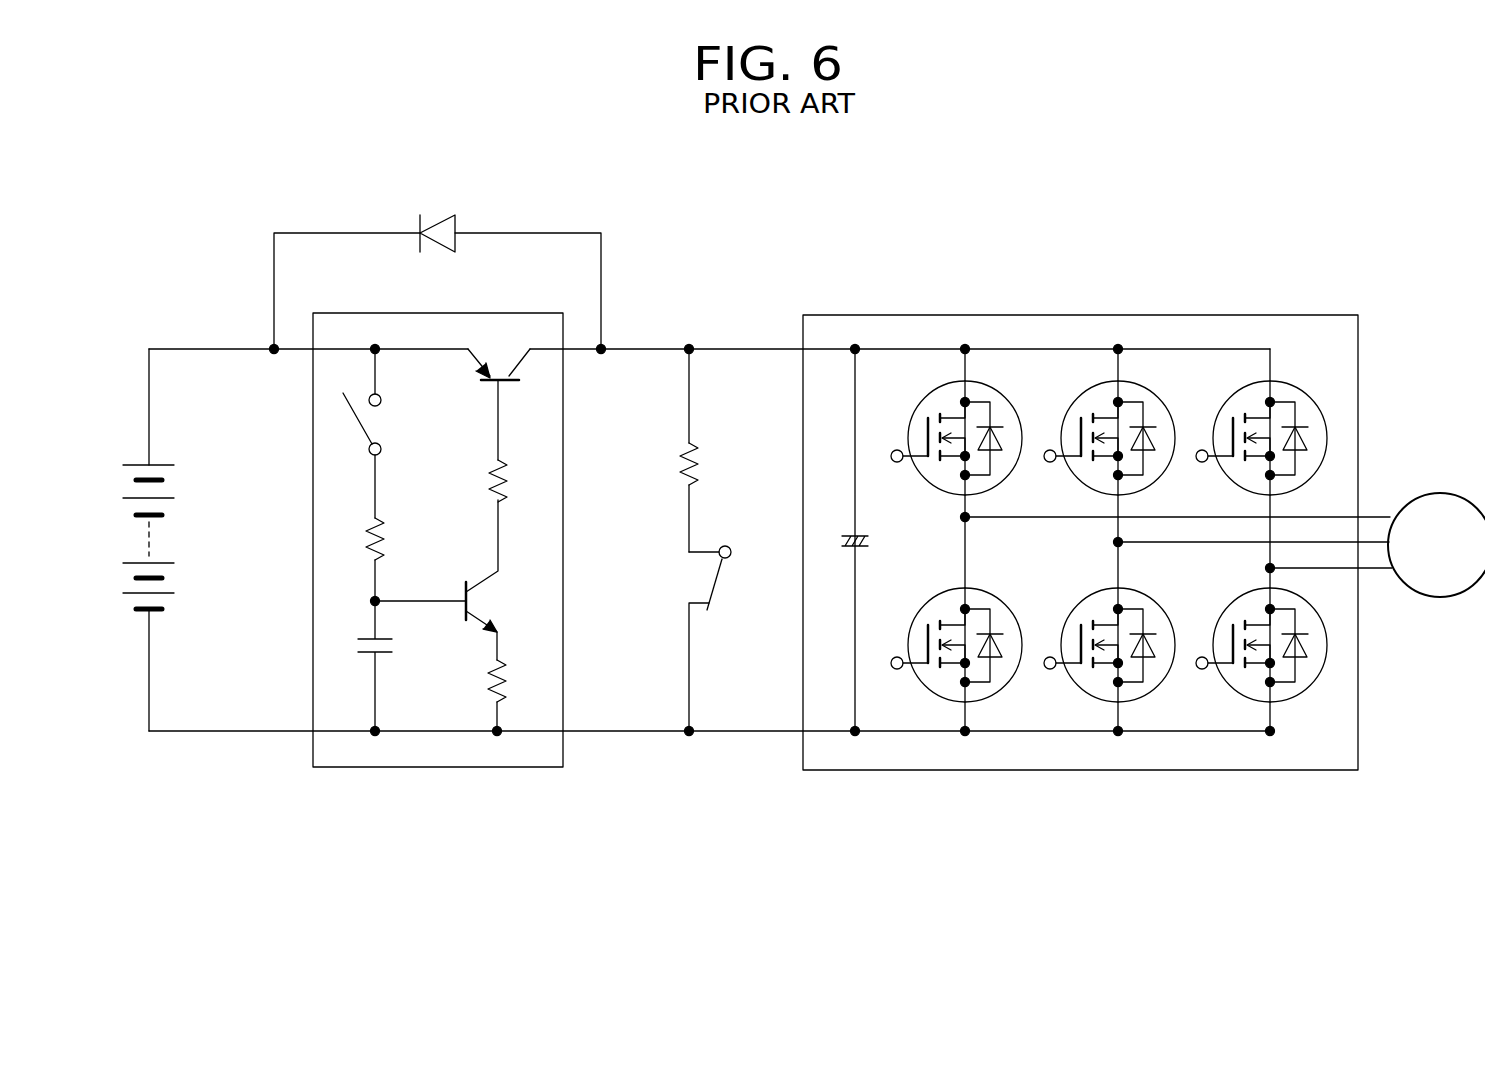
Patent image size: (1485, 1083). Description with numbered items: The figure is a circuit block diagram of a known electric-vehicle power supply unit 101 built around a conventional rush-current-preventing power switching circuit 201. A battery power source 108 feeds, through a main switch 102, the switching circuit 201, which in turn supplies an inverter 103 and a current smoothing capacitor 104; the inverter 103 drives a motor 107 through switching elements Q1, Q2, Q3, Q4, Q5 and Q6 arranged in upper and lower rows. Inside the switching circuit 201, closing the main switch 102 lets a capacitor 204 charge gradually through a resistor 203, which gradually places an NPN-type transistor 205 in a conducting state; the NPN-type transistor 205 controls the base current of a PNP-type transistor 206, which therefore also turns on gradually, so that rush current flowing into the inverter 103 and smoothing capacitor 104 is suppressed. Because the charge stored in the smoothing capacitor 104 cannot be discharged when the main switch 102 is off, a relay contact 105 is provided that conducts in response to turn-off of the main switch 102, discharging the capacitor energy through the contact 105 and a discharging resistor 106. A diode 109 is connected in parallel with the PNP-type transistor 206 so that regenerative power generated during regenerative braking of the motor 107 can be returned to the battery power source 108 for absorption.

The electric-vehicle power supply unit 101 is at (1145, 201).
The main switch 102 is at (352, 425).
The inverter 103 is at (930, 313).
The smoothing capacitor 104 is at (870, 541).
The relay contact 105 is at (710, 580).
The discharging resistor 106 is at (670, 462).
The motor 107 is at (1443, 492).
The battery power source 108 is at (170, 544).
The diode 109 is at (437, 220).
The rush-current-preventing power switching circuit 201 is at (425, 767).
The resistor 203 is at (390, 536).
The capacitor 204 is at (393, 647).
The NPN-type transistor 205 is at (475, 598).
The PNP-type transistor 206 is at (476, 361).
The switching element Q1 is at (953, 432).
The switching element Q2 is at (1106, 432).
The switching element Q3 is at (1257, 432).
The switching element Q4 is at (956, 636).
The switching element Q5 is at (1109, 636).
The switching element Q6 is at (1260, 636).